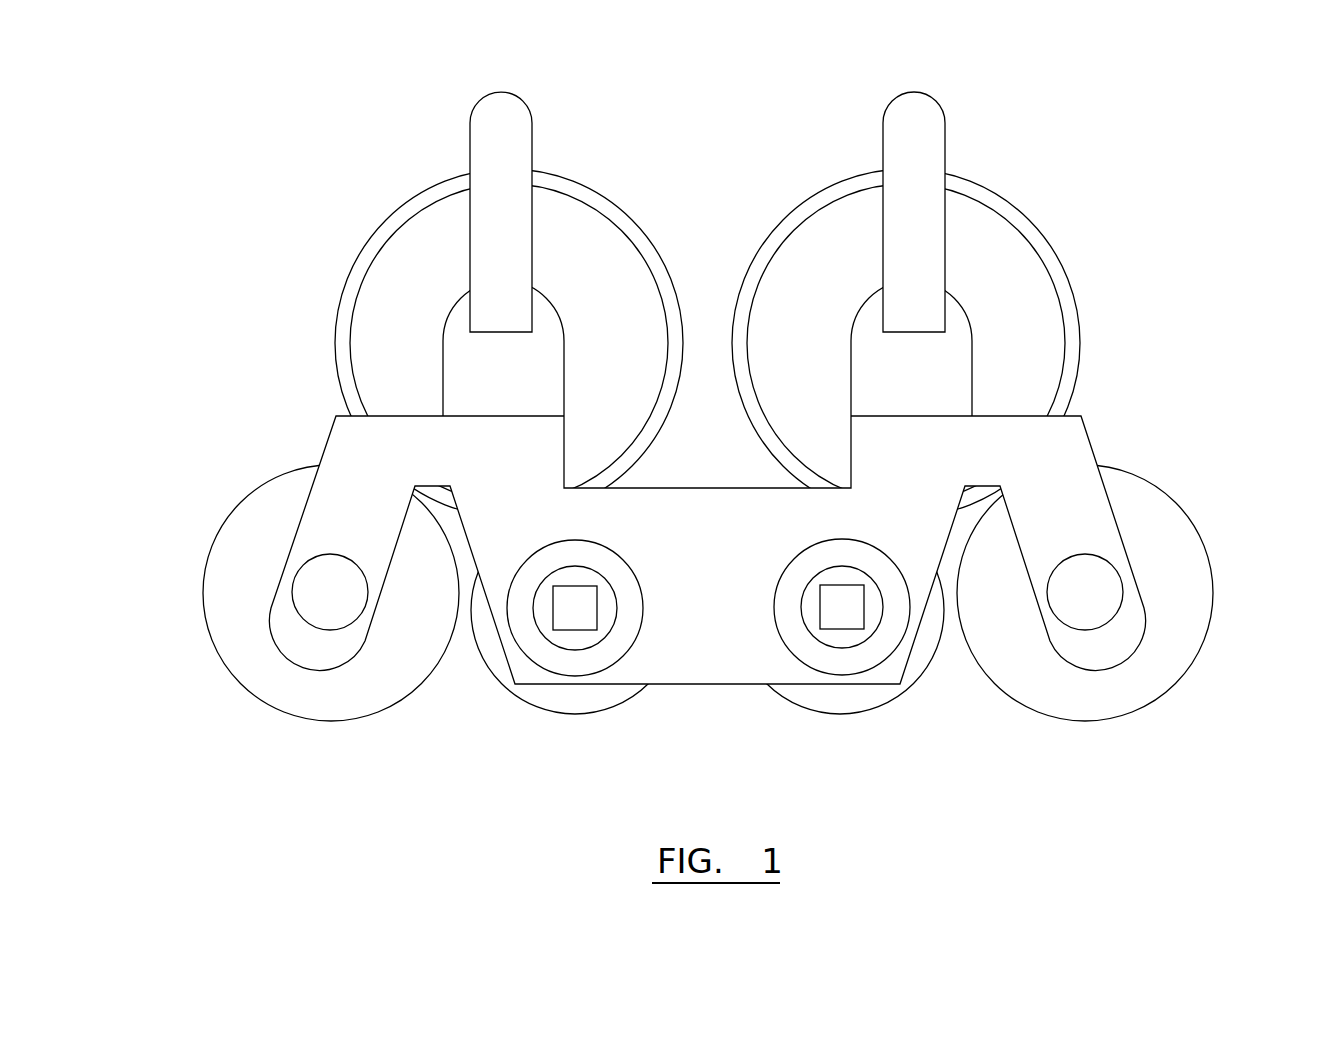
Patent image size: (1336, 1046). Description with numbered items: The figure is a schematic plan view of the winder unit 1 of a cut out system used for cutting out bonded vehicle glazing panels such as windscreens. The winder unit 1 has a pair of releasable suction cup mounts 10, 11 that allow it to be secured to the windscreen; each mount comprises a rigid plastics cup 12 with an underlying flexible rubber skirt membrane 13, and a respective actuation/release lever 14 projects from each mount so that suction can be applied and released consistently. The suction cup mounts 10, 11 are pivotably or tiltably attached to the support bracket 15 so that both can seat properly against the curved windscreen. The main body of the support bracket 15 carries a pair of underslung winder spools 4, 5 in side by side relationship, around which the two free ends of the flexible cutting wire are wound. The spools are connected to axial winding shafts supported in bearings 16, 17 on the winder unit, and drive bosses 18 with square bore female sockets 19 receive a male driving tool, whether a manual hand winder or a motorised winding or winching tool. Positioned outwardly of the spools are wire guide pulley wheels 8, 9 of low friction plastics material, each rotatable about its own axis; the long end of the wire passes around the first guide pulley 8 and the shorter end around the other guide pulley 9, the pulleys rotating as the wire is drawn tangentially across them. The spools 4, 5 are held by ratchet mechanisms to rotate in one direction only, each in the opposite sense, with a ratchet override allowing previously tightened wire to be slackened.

The winder unit 1 is at (714, 142).
The winder spool 4 is at (565, 702).
The winder spool 5 is at (858, 702).
The guide pulley 8 is at (1185, 628).
The guide pulley 9 is at (232, 632).
The suction cup mount 10 is at (558, 162).
The suction cup mount 11 is at (1005, 183).
The rigid plastics cup 12 is at (595, 232).
The flexible rubber skirt membrane 13 is at (647, 248).
The actuation/release lever 14 is at (497, 108).
The support bracket 15 is at (710, 500).
The bearing 16 is at (628, 610).
The bearing 17 is at (870, 555).
The drive boss 18 is at (570, 572).
The female socket 19 is at (590, 598).